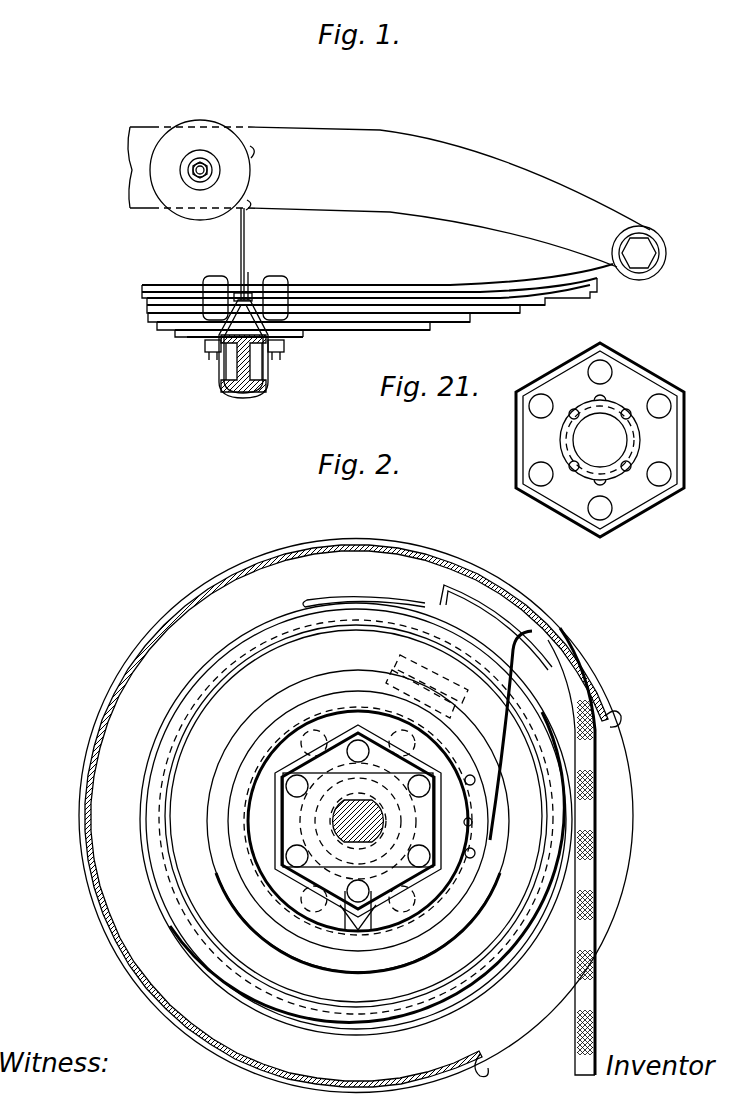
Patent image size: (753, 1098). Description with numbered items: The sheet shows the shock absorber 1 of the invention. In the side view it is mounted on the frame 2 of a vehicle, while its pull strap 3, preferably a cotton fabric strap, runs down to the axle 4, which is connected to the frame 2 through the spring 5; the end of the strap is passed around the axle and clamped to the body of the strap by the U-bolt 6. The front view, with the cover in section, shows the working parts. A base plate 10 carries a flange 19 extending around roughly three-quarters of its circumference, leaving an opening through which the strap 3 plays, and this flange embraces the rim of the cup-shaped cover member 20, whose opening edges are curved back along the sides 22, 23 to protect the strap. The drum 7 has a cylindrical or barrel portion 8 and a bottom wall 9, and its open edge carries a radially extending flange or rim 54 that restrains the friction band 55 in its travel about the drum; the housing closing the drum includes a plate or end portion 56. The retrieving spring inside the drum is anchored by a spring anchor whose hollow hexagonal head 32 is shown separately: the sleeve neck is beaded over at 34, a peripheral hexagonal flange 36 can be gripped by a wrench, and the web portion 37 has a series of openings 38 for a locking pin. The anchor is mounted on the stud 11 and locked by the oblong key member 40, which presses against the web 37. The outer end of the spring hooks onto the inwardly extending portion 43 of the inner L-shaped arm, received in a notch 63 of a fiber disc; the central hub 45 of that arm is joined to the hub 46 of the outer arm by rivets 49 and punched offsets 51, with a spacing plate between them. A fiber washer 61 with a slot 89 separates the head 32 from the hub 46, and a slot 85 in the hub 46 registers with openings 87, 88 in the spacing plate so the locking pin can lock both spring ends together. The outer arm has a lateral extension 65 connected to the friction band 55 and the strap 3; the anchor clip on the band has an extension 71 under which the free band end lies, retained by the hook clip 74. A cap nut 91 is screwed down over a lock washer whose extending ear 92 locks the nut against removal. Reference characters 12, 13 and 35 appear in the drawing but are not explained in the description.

In FIG. 1, the shock absorber 1 is at (230, 123).
In FIG. 1, the frame 2 is at (333, 138).
In FIG. 1, the pull strap 3 is at (248, 245).
In FIG. 2, the pull strap 3 is at (595, 1012).
In FIG. 1, the axle 4 is at (227, 393).
In FIG. 1, the spring 5 is at (370, 297).
In FIG. 1, the U-bolt 6 is at (242, 300).
In FIG. 2, the U-bolt 6 is at (343, 527).
In FIG. 1, the drum 7 is at (263, 298).
In FIG. 2, the drum 7 is at (540, 565).
In FIG. 2, the cylindrical or barrel portion 8 is at (25, 798).
In FIG. 2, the bottom wall 9 is at (223, 717).
In FIG. 2, the base plate 10 is at (120, 727).
In FIG. 1, the stud 11 is at (197, 170).
In FIG. 2, the stud 11 is at (290, 847).
In FIG. 2, the direction arrow 12 is at (300, 512).
In FIG. 2, the direction arrow 13 is at (287, 550).
In FIG. 2, the flange 19 is at (92, 902).
In FIG. 1, the cover member 20 is at (240, 127).
In FIG. 2, the cover member 20 is at (188, 608).
In FIG. 2, the curved-back side edge 22 is at (620, 713).
In FIG. 2, the curved-back side edge 23 is at (487, 1073).
In FIG. 21, the hollow hexagonal head 32 is at (652, 377).
In FIG. 2, the hollow hexagonal head 32 is at (273, 813).
In FIG. 21, the beaded neck metal 34 is at (637, 438).
In FIG. 21, the notches 35 is at (627, 422).
In FIG. 21, the peripheral hexagonal flange 36 is at (627, 367).
In FIG. 21, the web portion 37 is at (567, 387).
In FIG. 2, the web portion 37 is at (310, 773).
In FIG. 21, the openings 38 is at (663, 487).
In FIG. 2, the openings 38 is at (353, 902).
In FIG. 2, the key member 40 is at (388, 882).
In FIG. 2, the inwardly extending portion 43 is at (430, 672).
In FIG. 2, the central hub 45 is at (483, 780).
In FIG. 2, the hub 46 is at (478, 853).
In FIG. 2, the rivets 49 is at (293, 913).
In FIG. 2, the offsets 51 is at (280, 767).
In FIG. 2, the flange or rim 54 is at (175, 918).
In FIG. 2, the friction band 55 is at (183, 683).
In FIG. 2, the plate or end portion 56 is at (220, 925).
In FIG. 2, the fiber washer 61 is at (327, 917).
In FIG. 2, the notch 63 is at (440, 720).
In FIG. 2, the lateral extension 65 is at (515, 637).
In FIG. 2, the extension 71 is at (370, 613).
In FIG. 2, the hook clip 74 is at (507, 612).
In FIG. 2, the slot 85 is at (466, 822).
In FIG. 2, the openings 87 is at (340, 760).
In FIG. 2, the openings 88 is at (340, 825).
In FIG. 2, the slot 89 is at (348, 925).
In FIG. 1, the cap nut 91 is at (202, 190).
In FIG. 1, the extending ear 92 is at (200, 187).